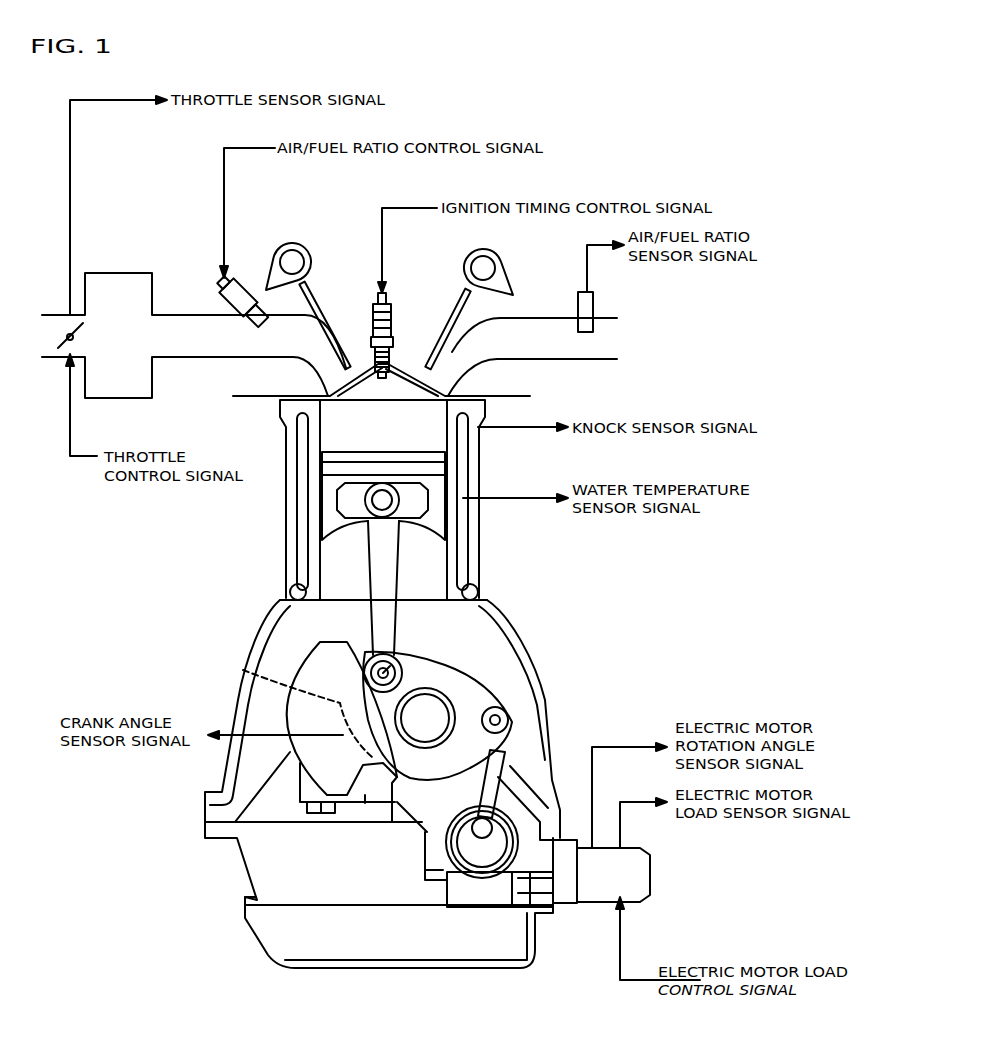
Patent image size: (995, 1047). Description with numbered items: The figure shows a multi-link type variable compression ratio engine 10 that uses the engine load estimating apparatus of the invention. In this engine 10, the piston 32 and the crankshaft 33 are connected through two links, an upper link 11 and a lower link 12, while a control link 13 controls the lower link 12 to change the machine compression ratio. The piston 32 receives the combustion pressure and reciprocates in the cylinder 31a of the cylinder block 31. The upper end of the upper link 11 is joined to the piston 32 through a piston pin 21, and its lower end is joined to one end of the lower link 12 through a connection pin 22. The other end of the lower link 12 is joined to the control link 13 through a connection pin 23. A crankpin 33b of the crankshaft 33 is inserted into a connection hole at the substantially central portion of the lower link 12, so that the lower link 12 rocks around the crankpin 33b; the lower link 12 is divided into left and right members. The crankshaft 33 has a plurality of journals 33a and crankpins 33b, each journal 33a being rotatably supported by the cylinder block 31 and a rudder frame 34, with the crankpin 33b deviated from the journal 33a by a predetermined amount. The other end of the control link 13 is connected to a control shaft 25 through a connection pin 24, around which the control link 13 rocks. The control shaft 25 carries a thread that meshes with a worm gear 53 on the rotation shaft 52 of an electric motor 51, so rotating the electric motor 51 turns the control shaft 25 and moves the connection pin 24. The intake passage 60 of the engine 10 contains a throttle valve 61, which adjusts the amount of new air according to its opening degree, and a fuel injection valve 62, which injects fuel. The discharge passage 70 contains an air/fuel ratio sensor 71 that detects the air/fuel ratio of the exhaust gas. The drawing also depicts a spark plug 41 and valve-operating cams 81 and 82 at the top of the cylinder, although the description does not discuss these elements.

The variable compression ratio engine 10 is at (193, 894).
The upper link 11 is at (393, 620).
The lower link 12 is at (453, 680).
The control link 13 is at (495, 757).
The piston pin 21 is at (366, 498).
The connection pin 22 is at (396, 670).
The connection pin 23 is at (502, 708).
The connection pin 24 is at (480, 832).
The control shaft 25 is at (468, 860).
The cylinder block 31 is at (477, 578).
The cylinder 31a is at (328, 438).
The piston 32 is at (440, 522).
The crankshaft 33 is at (298, 757).
The journal 33a is at (243, 670).
The crankpin 33b is at (390, 797).
The rudder frame 34 is at (365, 797).
The spark plug 41 is at (395, 318).
The electric motor 51 is at (594, 893).
The rotation shaft 52 is at (520, 893).
The worm gear 53 is at (477, 888).
The intake passage 60 is at (181, 358).
The throttle valve 61 is at (62, 322).
The fuel injection valve 62 is at (216, 303).
The discharge passage 70 is at (538, 318).
The air/fuel ratio sensor 71 is at (594, 298).
The intake valve cam 81 is at (322, 293).
The exhaust valve cam 82 is at (455, 290).